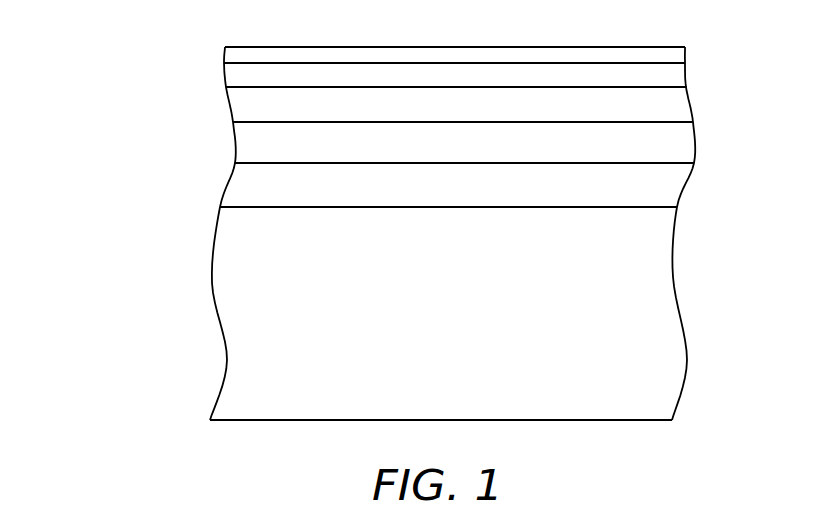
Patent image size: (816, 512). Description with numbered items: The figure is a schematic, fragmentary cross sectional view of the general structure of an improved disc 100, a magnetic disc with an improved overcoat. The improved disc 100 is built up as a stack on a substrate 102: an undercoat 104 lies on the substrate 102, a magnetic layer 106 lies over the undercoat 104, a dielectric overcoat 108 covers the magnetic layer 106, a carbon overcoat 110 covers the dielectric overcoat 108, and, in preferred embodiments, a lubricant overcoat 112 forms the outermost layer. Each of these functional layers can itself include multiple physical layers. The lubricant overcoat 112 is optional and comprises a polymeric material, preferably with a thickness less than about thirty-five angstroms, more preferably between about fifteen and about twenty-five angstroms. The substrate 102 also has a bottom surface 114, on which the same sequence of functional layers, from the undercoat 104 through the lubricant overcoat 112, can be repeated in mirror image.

The improved disc 100 is at (112, 266).
The substrate 102 is at (673, 277).
The undercoat 104 is at (688, 185).
The magnetic layer 106 is at (694, 140).
The dielectric overcoat 108 is at (233, 122).
The carbon overcoat 110 is at (686, 70).
The lubricant overcoat 112 is at (225, 53).
The bottom surface 114 is at (585, 420).